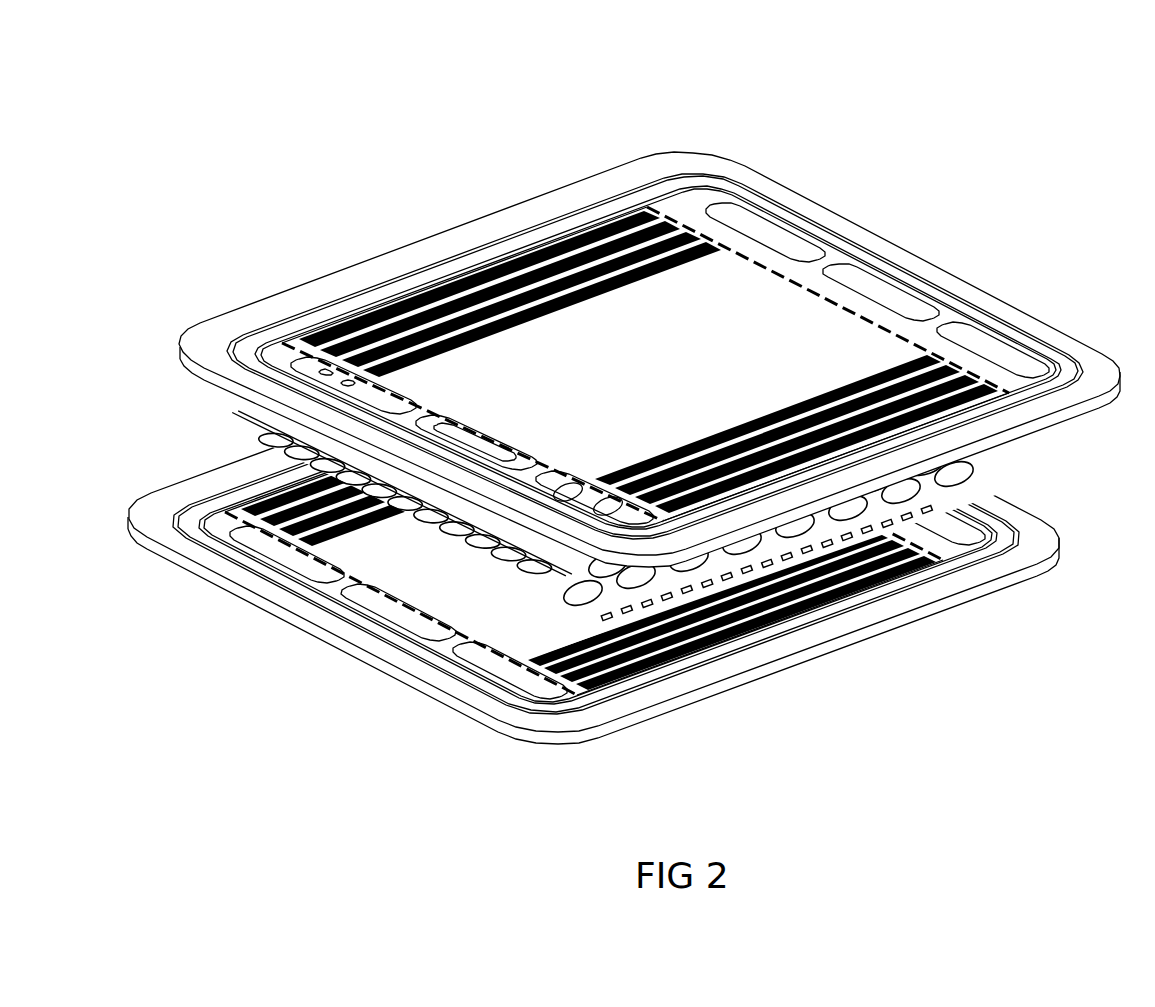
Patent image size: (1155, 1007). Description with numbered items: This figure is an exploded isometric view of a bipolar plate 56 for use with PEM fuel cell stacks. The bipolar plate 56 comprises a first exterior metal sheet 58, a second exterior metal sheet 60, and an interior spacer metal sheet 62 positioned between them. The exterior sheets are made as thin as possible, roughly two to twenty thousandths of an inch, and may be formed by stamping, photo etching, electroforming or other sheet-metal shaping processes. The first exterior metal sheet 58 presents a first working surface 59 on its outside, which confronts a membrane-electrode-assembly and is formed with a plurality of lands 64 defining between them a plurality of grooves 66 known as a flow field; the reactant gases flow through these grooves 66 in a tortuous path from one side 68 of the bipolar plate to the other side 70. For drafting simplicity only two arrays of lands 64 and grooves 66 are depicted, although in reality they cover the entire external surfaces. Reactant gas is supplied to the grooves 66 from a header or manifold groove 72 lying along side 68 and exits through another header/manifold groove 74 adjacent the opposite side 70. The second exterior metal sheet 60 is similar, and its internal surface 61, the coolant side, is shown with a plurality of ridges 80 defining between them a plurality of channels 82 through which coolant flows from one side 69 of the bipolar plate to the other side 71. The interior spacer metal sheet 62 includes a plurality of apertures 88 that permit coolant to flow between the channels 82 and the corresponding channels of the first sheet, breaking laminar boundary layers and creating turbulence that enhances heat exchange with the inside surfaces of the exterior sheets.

The bipolar plate 56 is at (632, 443).
The first exterior metal sheet 58 is at (1097, 370).
The first working surface 59 is at (592, 330).
The second exterior metal sheet 60 is at (1030, 563).
The internal surface 61 is at (490, 604).
The interior spacer metal sheet 62 is at (933, 487).
The lands 64 is at (467, 305).
The grooves 66 is at (407, 312).
The one side of the bipolar plate 68 is at (800, 198).
The one side of the bipolar plate 69 is at (1022, 520).
The other side of the bipolar plate 70 is at (203, 368).
The other side of the bipolar plate 71 is at (453, 693).
The header or manifold groove 72 is at (735, 243).
The header/manifold groove 74 is at (358, 340).
The ridges 80 is at (618, 612).
The channels 82 is at (702, 598).
The apertures 88 is at (793, 540).